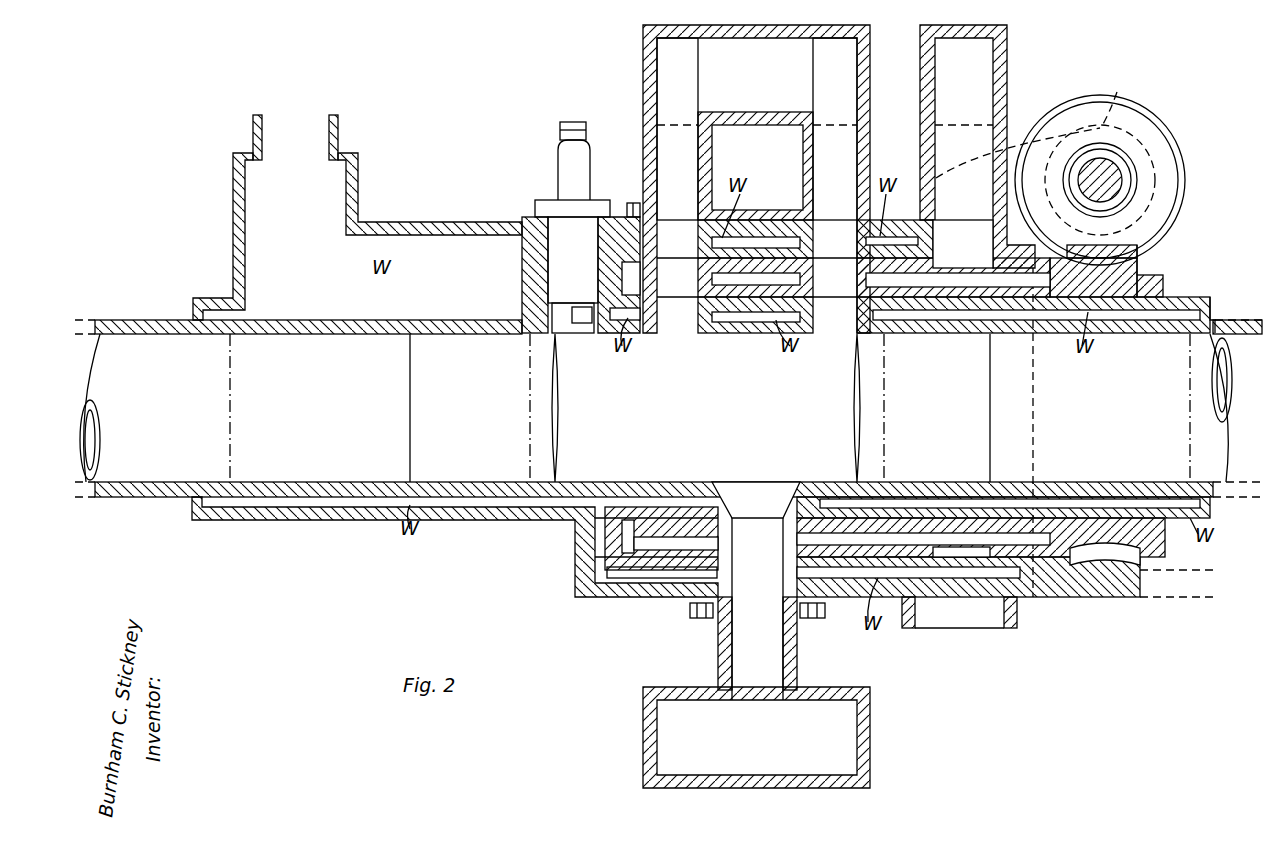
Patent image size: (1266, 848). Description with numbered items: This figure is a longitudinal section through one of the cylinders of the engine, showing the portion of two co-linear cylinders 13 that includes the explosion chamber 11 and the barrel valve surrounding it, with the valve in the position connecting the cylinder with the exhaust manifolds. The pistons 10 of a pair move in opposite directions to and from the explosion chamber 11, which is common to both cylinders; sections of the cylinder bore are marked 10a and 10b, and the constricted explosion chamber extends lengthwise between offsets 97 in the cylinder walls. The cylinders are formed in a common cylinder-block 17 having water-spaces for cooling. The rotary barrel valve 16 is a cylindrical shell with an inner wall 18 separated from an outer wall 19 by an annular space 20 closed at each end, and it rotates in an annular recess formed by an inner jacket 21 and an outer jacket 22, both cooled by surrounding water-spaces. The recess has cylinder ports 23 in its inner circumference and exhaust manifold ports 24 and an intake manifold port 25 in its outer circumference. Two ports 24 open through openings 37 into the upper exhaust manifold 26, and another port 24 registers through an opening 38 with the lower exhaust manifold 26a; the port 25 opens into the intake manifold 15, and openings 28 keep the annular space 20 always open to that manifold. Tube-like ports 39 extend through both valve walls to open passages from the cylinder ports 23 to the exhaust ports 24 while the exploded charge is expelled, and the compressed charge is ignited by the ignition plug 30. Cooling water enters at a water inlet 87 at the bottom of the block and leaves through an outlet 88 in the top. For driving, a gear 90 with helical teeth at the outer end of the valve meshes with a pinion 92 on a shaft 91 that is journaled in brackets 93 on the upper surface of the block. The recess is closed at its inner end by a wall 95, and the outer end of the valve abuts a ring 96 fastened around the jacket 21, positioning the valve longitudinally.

The piston 10 is at (1230, 438).
The tube section 10a is at (900, 391).
The tube section 10b is at (232, 405).
The explosion chamber 11 is at (707, 408).
The cylinder 13 is at (432, 331).
The intake manifold 15 is at (977, 146).
The rotary barrel valve 16 is at (1149, 274).
The cylinder-block 17 is at (556, 537).
The inner wall 18 is at (920, 293).
The outer wall 19 is at (1017, 268).
The annular space 20 is at (990, 280).
The inner jacket 21 is at (737, 316).
The outer jacket 22 is at (762, 240).
The cylinder port 23 is at (936, 407).
The exhaust manifold port 24 is at (867, 408).
The intake manifold port 25 is at (963, 244).
The upper exhaust manifold 26 is at (756, 179).
The lower exhaust manifold 26a is at (756, 737).
The circumferentially-spaced opening 28 is at (967, 270).
The ignition plug 30 is at (581, 227).
The opening 37 is at (757, 129).
The opening 38 is at (757, 609).
The port 39 is at (880, 407).
The water inlet 87 is at (935, 612).
The outlet 88 is at (300, 136).
The gear 90 is at (1130, 553).
The shaft 91 is at (1122, 180).
The pinion 92 is at (1128, 115).
The bracket 93 is at (1045, 151).
The wall 95 is at (612, 545).
The ring 96 is at (1163, 289).
The offset 97 is at (552, 425).